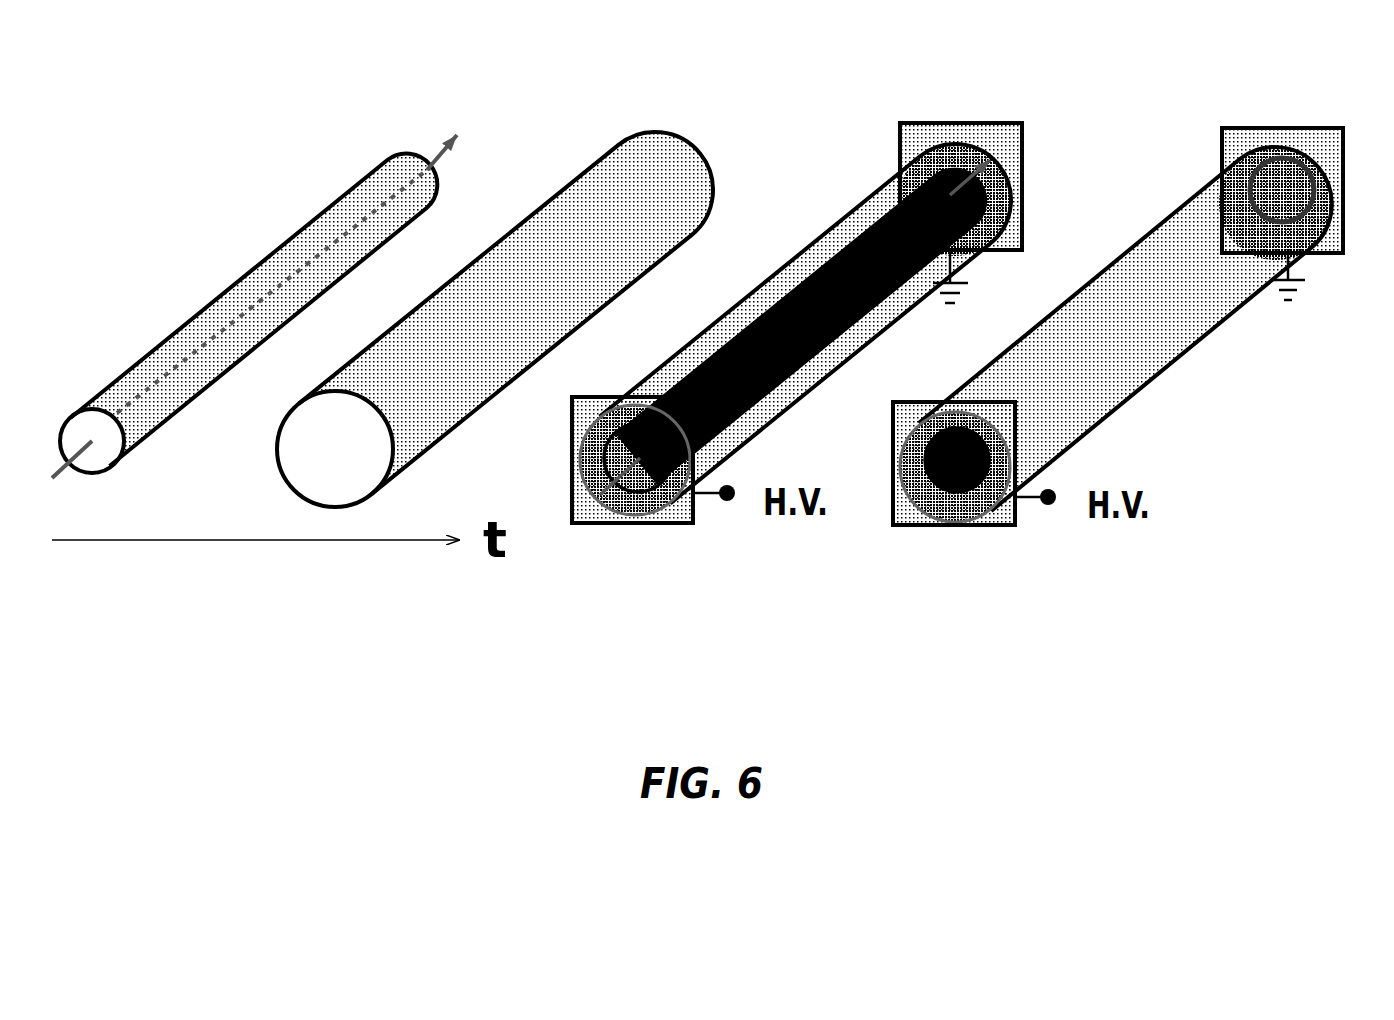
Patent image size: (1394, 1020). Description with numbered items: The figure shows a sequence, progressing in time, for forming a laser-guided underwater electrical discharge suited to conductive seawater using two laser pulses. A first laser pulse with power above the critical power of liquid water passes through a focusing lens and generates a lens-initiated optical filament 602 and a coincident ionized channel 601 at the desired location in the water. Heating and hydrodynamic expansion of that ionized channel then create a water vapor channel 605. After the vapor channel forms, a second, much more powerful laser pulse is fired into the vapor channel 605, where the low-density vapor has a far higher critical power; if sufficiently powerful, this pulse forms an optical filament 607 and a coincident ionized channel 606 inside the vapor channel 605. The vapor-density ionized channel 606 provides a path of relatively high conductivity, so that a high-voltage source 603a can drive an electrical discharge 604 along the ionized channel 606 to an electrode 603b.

The ionized channel 601 is at (140, 350).
The lens-initiated optical filament 602 is at (355, 225).
The water vapor channel 605 is at (595, 160).
The ionized channel 606 is at (797, 282).
The optical filament 607 is at (878, 255).
The high-voltage source 603a is at (963, 530).
The electrode 603b is at (1278, 127).
The electrical discharge 604 is at (1192, 240).